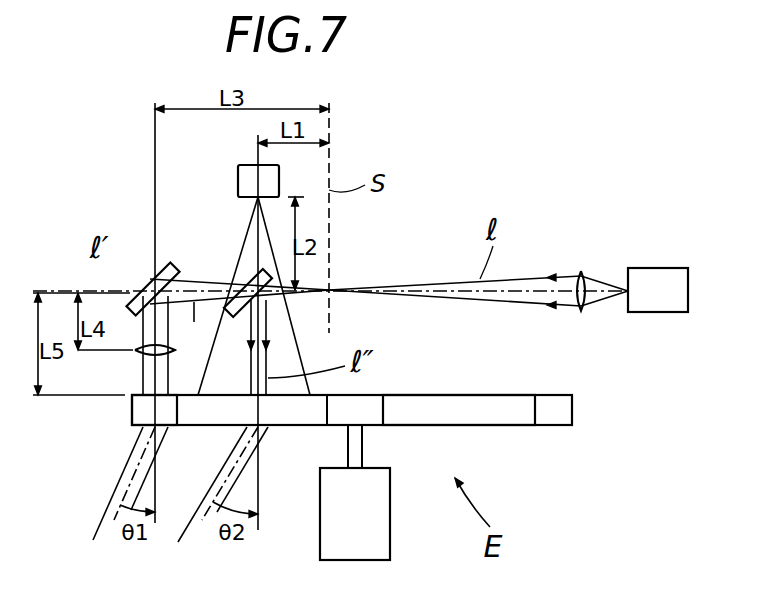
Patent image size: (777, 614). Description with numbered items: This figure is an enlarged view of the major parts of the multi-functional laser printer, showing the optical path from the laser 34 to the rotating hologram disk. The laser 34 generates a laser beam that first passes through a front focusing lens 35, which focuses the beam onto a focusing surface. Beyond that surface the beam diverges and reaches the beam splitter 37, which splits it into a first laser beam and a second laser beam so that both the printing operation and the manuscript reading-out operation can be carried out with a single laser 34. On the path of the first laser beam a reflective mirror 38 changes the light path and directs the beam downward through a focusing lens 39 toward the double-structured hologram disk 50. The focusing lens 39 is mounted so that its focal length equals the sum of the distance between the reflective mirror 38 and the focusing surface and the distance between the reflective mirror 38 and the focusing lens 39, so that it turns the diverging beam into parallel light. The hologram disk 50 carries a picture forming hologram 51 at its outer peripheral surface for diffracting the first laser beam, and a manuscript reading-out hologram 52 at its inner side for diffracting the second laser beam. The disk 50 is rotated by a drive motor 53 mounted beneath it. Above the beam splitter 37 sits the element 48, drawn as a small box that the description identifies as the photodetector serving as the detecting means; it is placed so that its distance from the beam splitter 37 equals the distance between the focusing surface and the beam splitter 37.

The laser 34 is at (650, 268).
The focusing lens 35 is at (584, 272).
The beam splitter 37 is at (244, 287).
The reflective mirror 38 is at (147, 278).
The focusing lens 39 is at (137, 352).
The photodetector 48 is at (238, 175).
The double-structured hologram disk 50 is at (572, 413).
The picture forming hologram 51 is at (132, 418).
The manuscript reading-out hologram 52 is at (515, 420).
The drive motor 53 is at (390, 532).